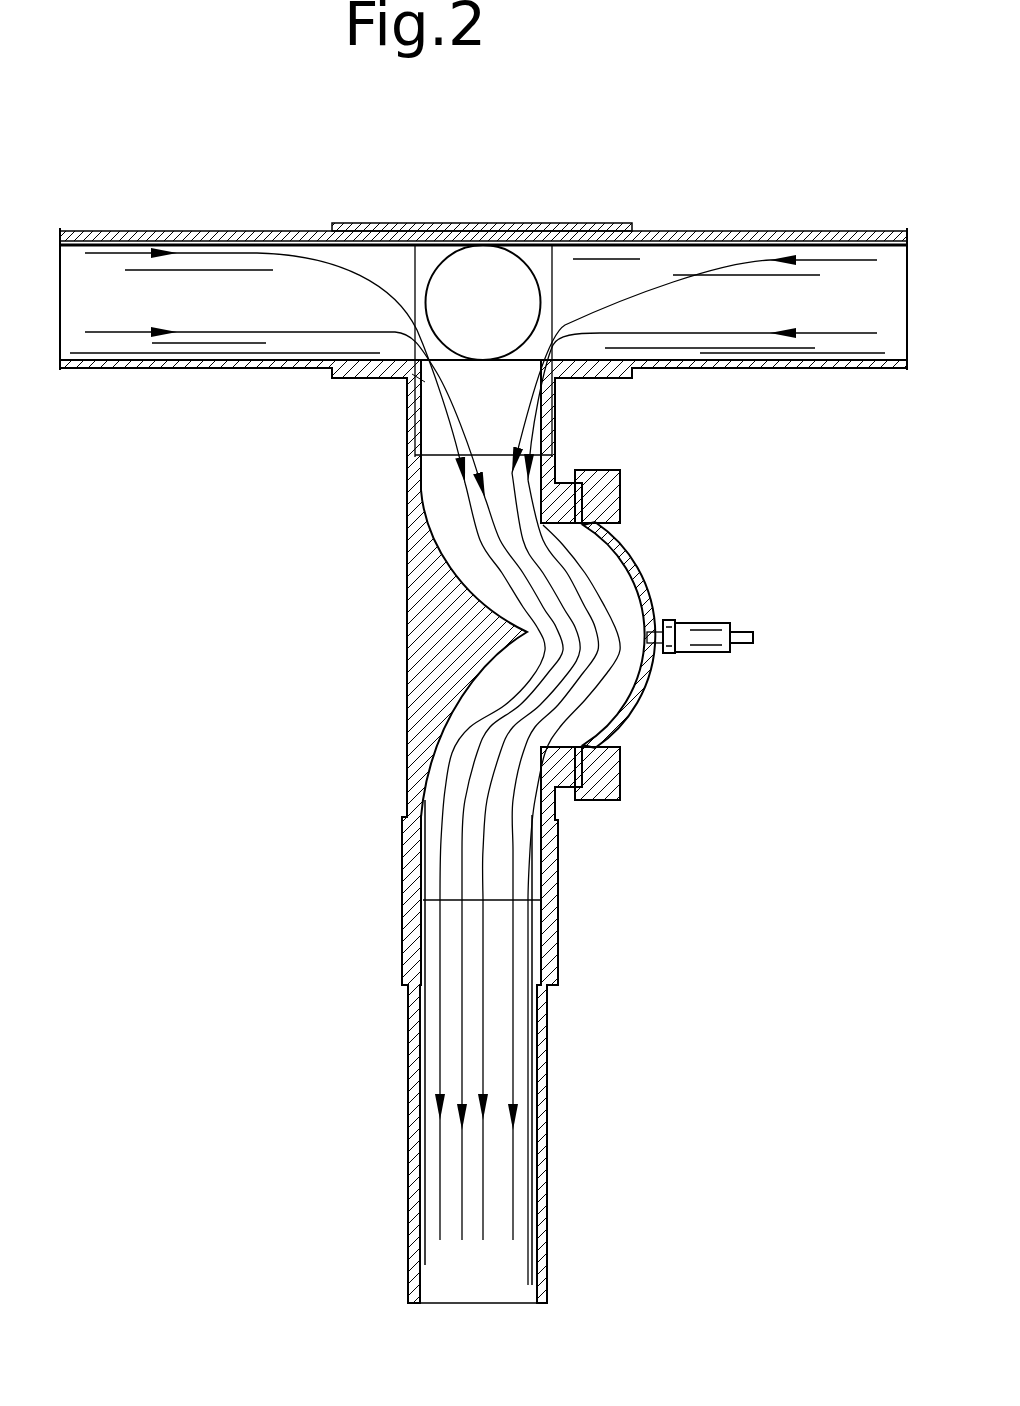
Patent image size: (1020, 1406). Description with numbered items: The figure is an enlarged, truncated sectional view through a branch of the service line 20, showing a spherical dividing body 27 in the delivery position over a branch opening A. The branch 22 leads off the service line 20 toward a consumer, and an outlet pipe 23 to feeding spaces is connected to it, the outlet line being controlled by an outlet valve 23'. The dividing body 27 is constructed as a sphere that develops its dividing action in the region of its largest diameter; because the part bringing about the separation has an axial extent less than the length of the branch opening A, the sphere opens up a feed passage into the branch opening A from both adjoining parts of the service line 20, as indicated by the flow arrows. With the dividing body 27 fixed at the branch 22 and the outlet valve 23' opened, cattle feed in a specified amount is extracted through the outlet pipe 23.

The service line 20 is at (830, 375).
The branch 22 is at (537, 222).
The outlet pipe 23 is at (517, 1051).
The outlet valve 23' is at (664, 635).
The dividing body 27 is at (443, 242).
The branch opening A is at (420, 380).